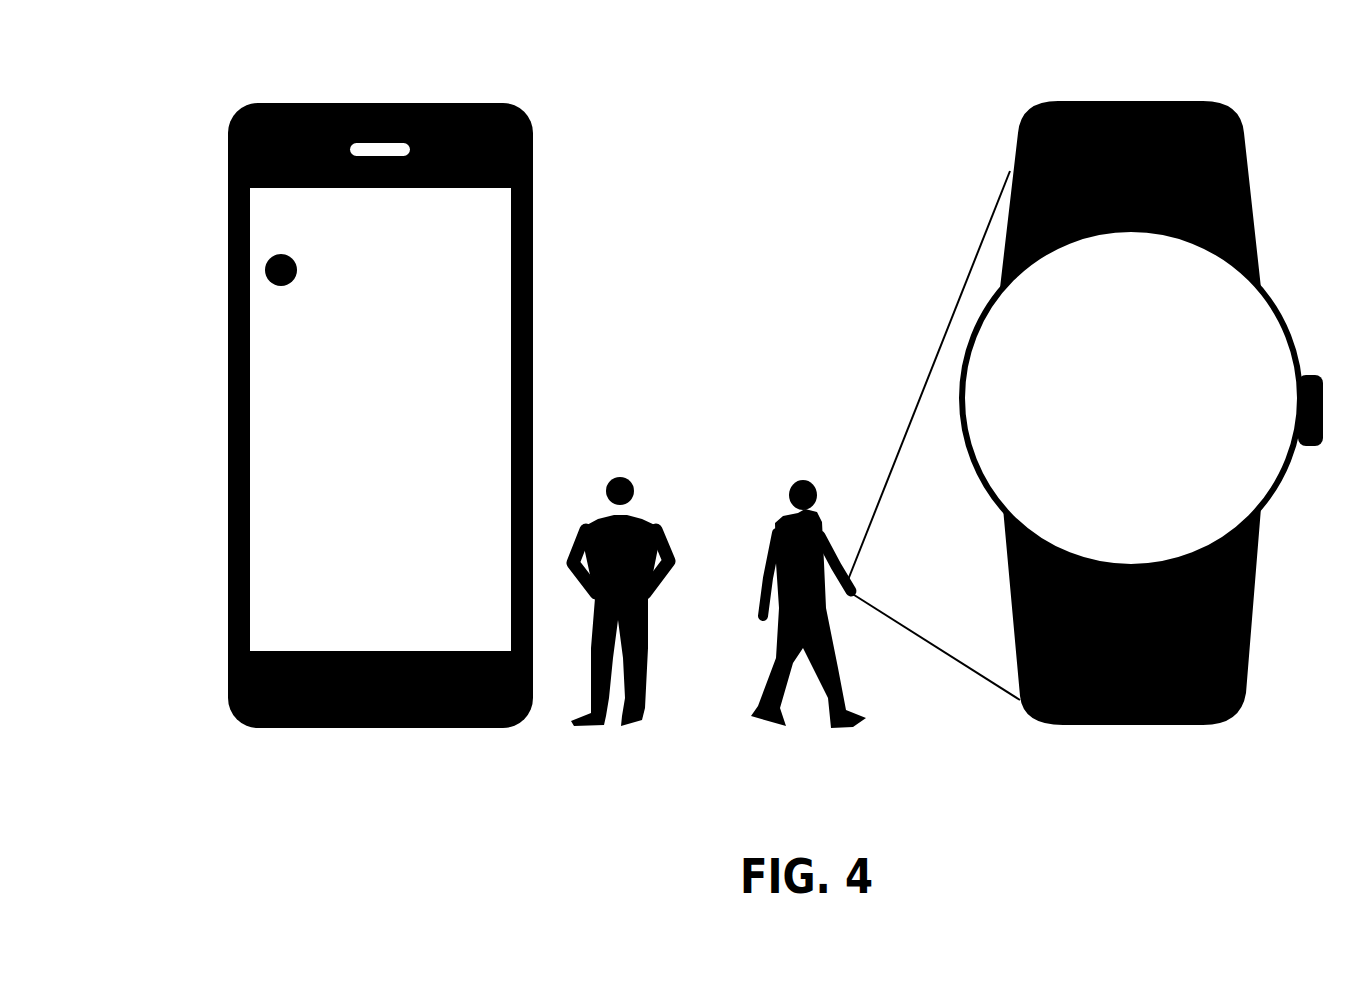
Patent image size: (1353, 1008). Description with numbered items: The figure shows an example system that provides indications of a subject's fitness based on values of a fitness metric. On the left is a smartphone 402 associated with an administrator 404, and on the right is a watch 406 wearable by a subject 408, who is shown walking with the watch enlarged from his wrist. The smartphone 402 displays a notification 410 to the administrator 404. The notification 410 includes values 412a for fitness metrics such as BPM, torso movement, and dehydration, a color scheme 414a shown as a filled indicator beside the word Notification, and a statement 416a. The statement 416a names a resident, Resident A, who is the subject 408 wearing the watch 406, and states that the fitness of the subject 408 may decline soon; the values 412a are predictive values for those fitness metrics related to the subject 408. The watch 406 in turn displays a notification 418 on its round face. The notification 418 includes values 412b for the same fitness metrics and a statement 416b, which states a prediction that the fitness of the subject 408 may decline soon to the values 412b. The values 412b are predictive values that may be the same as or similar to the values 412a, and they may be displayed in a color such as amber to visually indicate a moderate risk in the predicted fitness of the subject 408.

The smartphone 402 is at (331, 388).
The administrator 404 is at (633, 705).
The watch 406 is at (1116, 384).
The subject 408 is at (842, 717).
The notification 410 is at (477, 213).
The values 412a is at (386, 423).
The values 412b is at (994, 422).
The color scheme 414a is at (286, 251).
The statement 416a is at (263, 329).
The statement 416b is at (1197, 292).
The notification 418 is at (1148, 545).